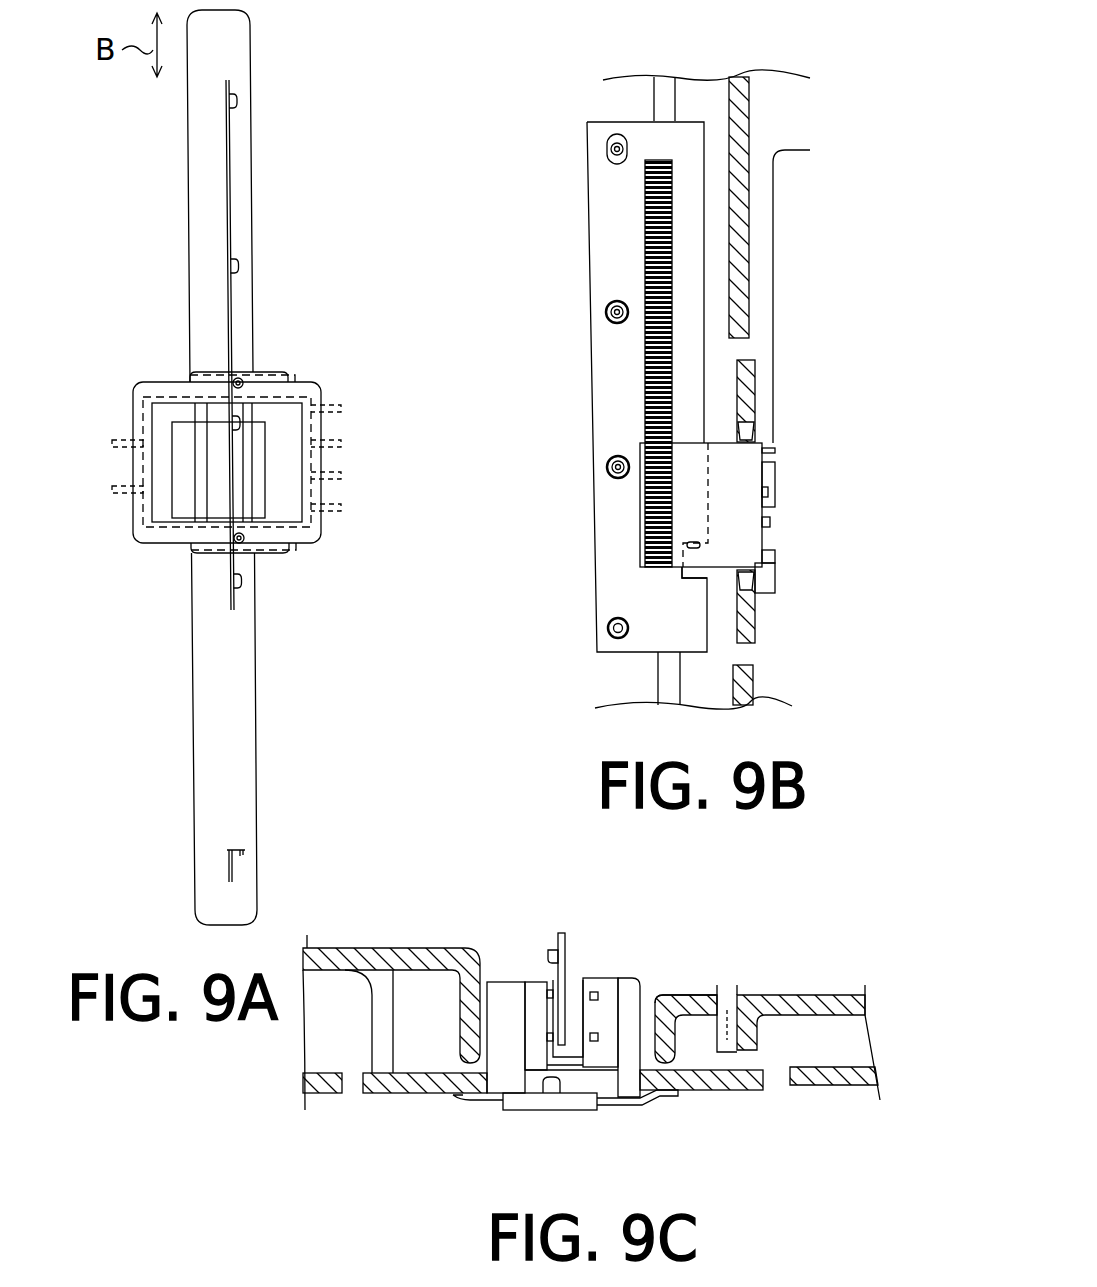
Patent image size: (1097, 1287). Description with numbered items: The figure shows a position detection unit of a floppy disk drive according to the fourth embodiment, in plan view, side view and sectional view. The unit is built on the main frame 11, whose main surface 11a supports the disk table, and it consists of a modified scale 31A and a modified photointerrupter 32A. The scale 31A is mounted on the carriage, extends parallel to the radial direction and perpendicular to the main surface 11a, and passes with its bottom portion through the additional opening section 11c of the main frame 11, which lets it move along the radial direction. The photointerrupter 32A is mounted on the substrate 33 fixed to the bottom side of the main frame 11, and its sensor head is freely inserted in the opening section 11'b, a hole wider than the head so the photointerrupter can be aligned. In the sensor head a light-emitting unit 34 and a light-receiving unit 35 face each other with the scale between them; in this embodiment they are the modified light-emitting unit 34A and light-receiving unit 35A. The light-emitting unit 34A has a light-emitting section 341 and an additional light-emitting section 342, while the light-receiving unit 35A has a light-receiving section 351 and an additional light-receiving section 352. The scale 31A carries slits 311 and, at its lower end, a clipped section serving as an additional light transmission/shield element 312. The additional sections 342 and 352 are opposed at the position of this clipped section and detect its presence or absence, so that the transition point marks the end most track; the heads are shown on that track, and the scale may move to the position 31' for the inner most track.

In FIG. 9B, the main frame 11 is at (679, 389).
In FIG. 9C, the main frame 11 is at (591, 991).
In FIG. 9A, the main surface 11a is at (170, 337).
In FIG. 9A, the additional opening section 11c is at (222, 52).
In FIG. 9A, the opening section 11'b is at (278, 468).
In FIG. 9C, the opening section 11'b is at (697, 976).
In FIG. 9A, the scale 31A is at (233, 183).
In FIG. 9B, the scale 31A is at (610, 242).
In FIG. 9B, the slits 311 is at (645, 160).
In FIG. 9B, the additional light transmission/shield element 312 is at (692, 573).
In FIG. 9A, the position of scale 31' is at (283, 861).
In FIG. 9A, the photointerrupter 32A is at (288, 468).
In FIG. 9B, the photointerrupter 32A is at (730, 488).
In FIG. 9C, the photointerrupter 32A is at (497, 1018).
In FIG. 9A, the substrate 33 is at (143, 418).
In FIG. 9B, the substrate 33 is at (752, 598).
In FIG. 9C, the substrate 33 is at (388, 1093).
In FIG. 9A, the light-emitting unit 34 is at (195, 472).
In FIG. 9C, the light-emitting unit 34A is at (642, 1012).
In FIG. 9C, the light-emitting section 341 is at (607, 1005).
In FIG. 9C, the additional light-emitting section 342 is at (595, 1037).
In FIG. 9A, the light-receiving unit 35 is at (262, 437).
In FIG. 9C, the light-receiving unit 35A is at (536, 990).
In FIG. 9C, the light-receiving section 351 is at (518, 998).
In FIG. 9B, the additional light-receiving section 352 is at (700, 543).
In FIG. 9C, the additional light-receiving section 352 is at (548, 1042).